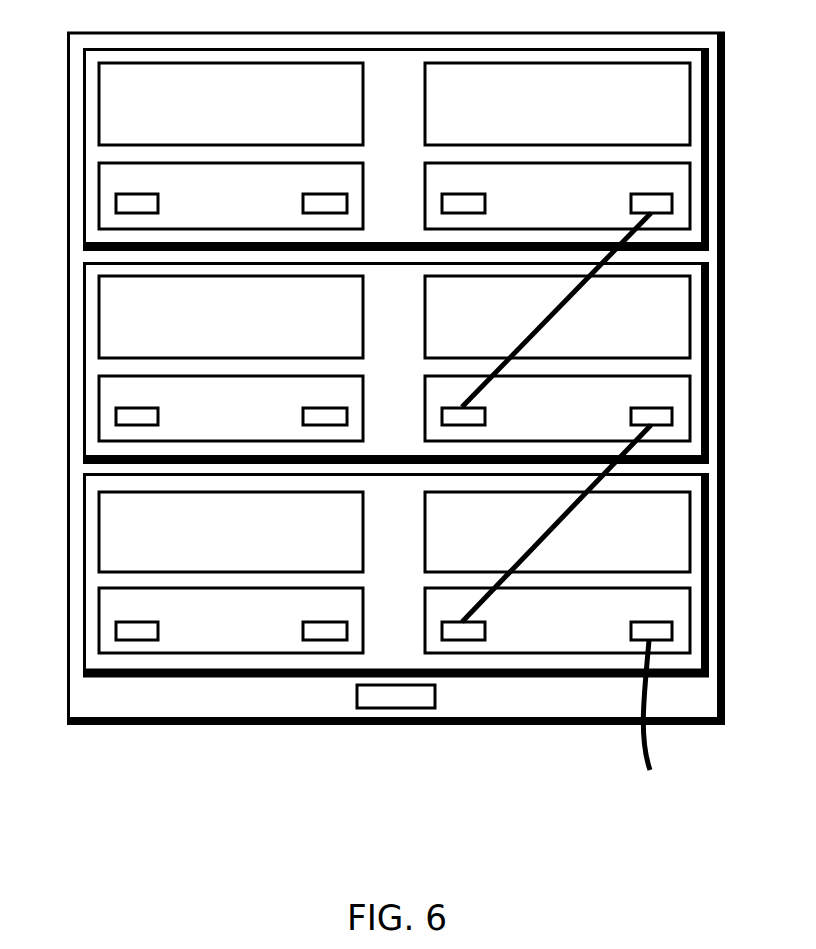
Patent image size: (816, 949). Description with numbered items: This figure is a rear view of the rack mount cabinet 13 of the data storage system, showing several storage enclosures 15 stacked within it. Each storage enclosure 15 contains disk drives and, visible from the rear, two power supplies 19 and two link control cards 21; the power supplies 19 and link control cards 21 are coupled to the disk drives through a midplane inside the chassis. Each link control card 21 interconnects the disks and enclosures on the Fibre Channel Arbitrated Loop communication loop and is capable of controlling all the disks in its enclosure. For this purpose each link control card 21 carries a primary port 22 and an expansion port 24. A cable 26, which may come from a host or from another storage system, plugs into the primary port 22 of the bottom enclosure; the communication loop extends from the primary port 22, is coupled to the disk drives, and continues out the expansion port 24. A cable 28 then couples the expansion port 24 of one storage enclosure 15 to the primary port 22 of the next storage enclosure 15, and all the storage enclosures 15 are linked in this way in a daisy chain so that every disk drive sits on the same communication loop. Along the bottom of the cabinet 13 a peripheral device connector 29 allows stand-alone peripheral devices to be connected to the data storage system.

The rack mount cabinet 13 is at (68, 200).
The storage enclosure 15 is at (80, 412).
The power supply 19 is at (100, 528).
The link control card 21 is at (100, 620).
The primary port 22 is at (303, 640).
The expansion port 24 is at (158, 640).
The cable 26 is at (649, 747).
The cable 28 is at (553, 527).
The peripheral device connector 29 is at (392, 708).